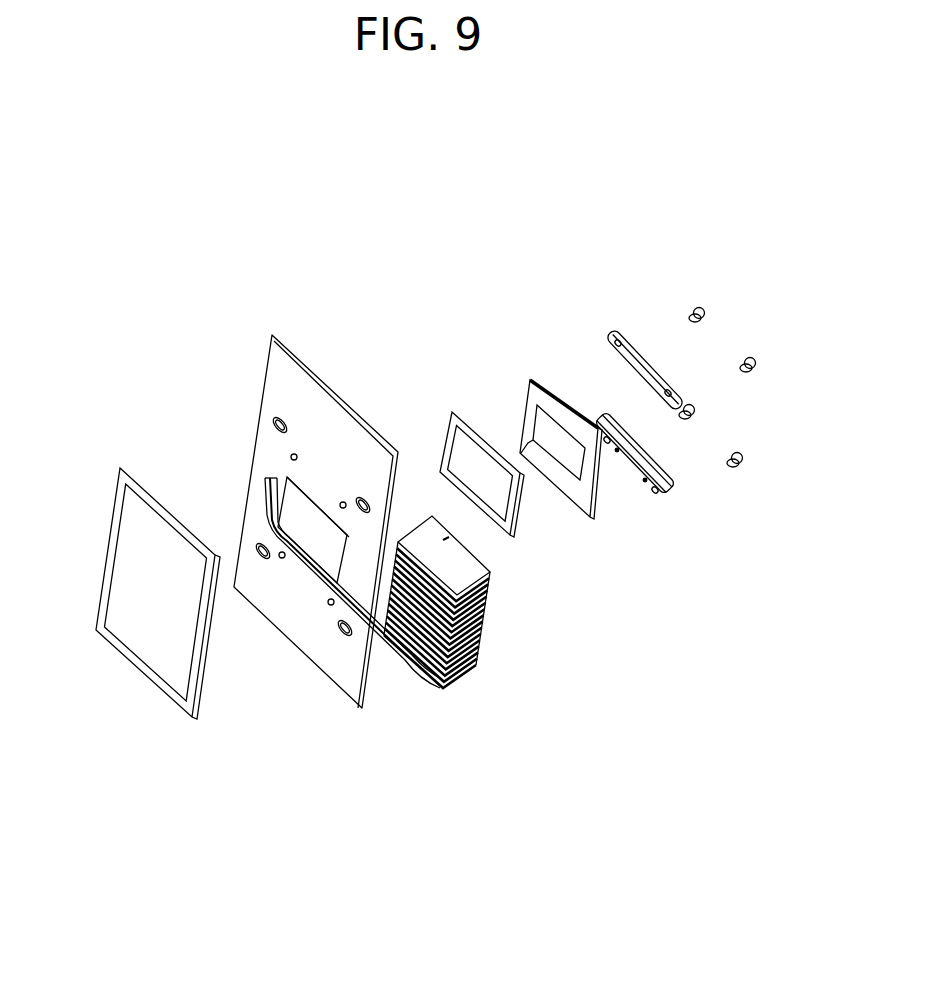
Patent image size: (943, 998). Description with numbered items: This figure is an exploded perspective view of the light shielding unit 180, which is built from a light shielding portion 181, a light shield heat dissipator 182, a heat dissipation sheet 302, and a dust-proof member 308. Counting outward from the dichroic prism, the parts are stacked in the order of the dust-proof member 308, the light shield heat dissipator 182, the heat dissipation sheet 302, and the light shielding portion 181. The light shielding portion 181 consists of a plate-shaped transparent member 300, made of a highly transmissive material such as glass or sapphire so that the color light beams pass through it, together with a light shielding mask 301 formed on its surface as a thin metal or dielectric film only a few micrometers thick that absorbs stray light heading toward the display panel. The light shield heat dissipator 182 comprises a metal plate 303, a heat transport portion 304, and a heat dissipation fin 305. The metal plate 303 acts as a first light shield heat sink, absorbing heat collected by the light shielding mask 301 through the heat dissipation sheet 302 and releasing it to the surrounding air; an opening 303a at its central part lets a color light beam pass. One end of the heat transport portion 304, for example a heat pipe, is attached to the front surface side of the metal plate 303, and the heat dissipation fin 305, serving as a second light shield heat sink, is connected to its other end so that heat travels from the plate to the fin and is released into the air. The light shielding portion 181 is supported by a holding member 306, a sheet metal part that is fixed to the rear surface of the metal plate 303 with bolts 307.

The light shielding unit 180 is at (393, 161).
The light shielding portion 181 is at (448, 257).
The light shield heat dissipator 182 is at (530, 793).
The transparent member 300 is at (537, 375).
The light shielding mask 301 is at (528, 443).
The heat dissipation sheet 302 is at (483, 453).
The metal plate 303 is at (285, 617).
The opening 303a is at (298, 513).
The heat transport portion 304 is at (357, 623).
The heat dissipation fin 305 is at (462, 642).
The holding member 306 is at (668, 402).
The bolts 307 is at (735, 468).
The dust-proof member 308 is at (198, 633).